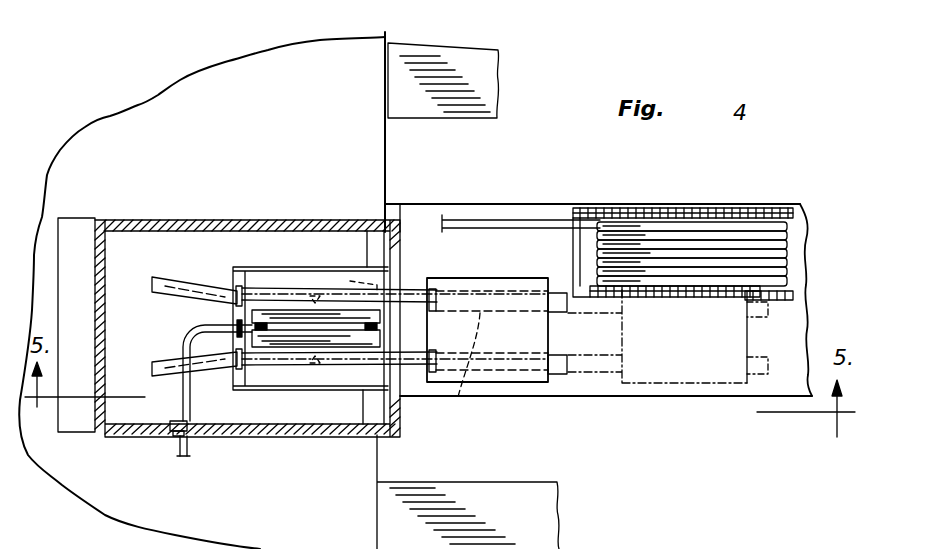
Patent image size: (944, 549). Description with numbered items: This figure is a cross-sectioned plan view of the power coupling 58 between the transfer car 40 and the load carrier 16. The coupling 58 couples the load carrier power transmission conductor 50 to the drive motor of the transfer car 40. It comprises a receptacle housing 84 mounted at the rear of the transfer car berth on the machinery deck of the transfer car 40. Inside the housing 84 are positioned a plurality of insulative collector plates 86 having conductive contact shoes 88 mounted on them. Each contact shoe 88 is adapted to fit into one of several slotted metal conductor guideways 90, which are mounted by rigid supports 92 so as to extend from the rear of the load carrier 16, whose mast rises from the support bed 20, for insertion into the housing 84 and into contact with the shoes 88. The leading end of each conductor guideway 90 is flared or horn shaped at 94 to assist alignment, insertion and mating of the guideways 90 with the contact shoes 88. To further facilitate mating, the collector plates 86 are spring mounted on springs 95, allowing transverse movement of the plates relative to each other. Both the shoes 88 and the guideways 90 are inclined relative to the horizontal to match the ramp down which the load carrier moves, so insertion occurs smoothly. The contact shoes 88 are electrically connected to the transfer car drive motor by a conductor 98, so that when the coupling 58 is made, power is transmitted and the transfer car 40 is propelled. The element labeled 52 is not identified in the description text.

The load carrier 16 is at (704, 405).
The support bed 20 is at (592, 392).
The transfer car 40 is at (252, 50).
The power transmission conductor 50 is at (514, 228).
The coil spring assembly 52 is at (652, 222).
The coupling 58 is at (417, 234).
The receptacle housing 84 is at (341, 221).
The insulative collector plates 86 is at (237, 312).
The conductive contact shoes 88 is at (342, 300).
The slotted metal conductor guideways 90 is at (500, 370).
The rigid supports 92 is at (527, 383).
The flared leading end 94 is at (150, 371).
The springs 95 is at (276, 333).
The conductor 98 is at (175, 450).